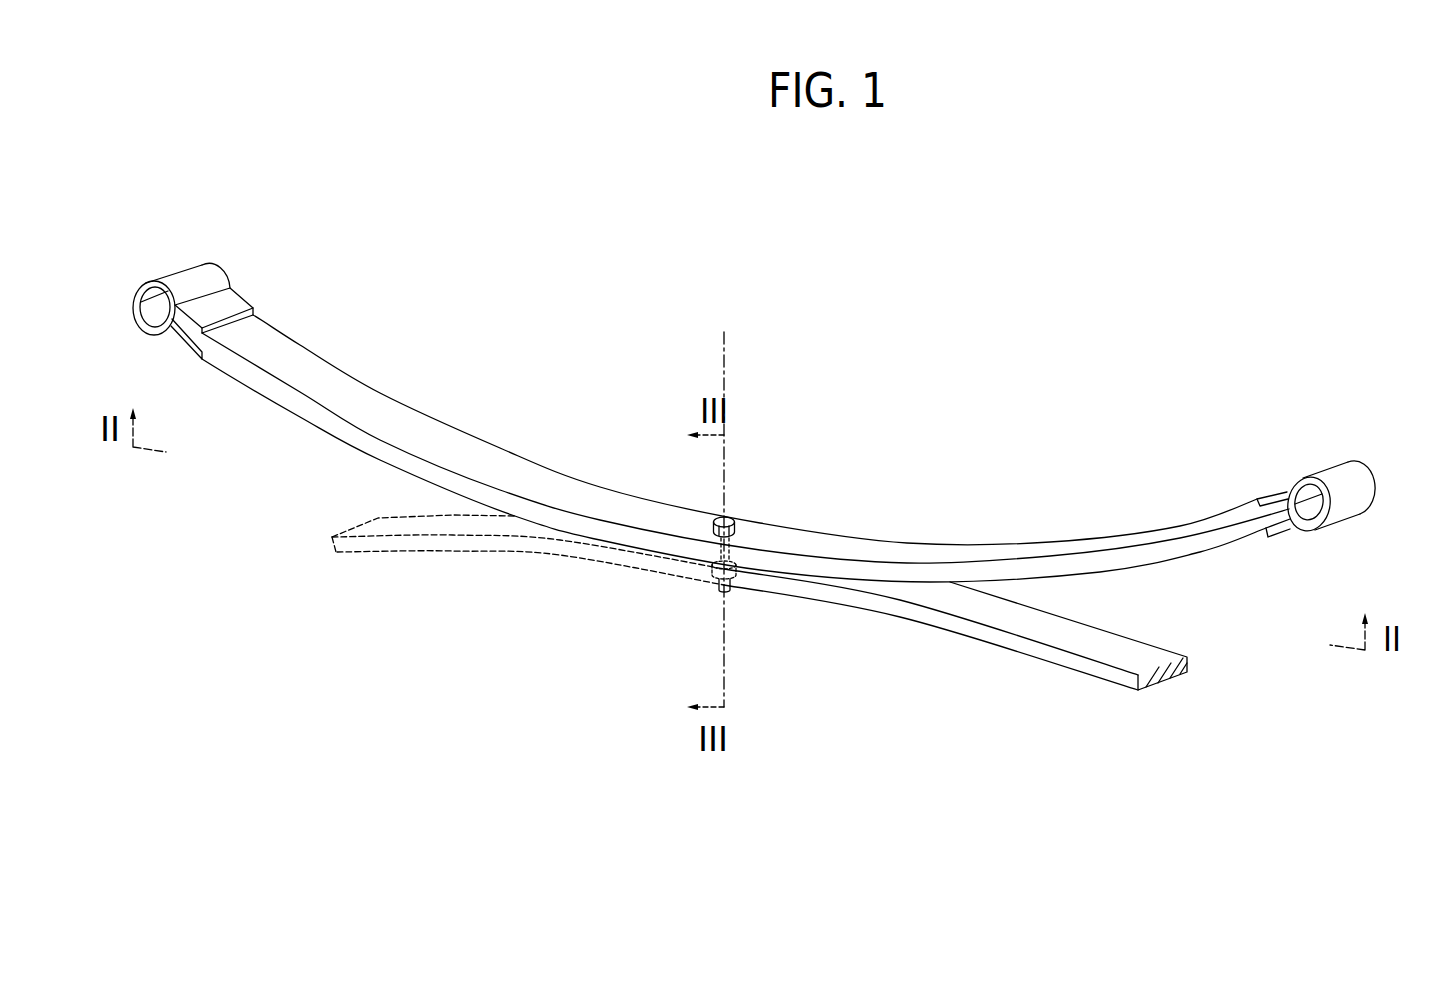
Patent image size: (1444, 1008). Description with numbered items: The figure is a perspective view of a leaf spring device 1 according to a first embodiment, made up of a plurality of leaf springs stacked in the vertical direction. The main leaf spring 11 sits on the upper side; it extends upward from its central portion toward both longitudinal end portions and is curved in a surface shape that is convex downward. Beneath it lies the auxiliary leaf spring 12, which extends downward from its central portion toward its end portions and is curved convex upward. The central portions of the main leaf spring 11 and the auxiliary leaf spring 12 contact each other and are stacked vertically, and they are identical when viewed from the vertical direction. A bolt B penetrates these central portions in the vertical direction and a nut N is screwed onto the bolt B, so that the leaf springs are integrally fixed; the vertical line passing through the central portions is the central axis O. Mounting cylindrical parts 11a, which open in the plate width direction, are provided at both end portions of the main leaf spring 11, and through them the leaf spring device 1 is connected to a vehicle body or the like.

The leaf spring device 1 is at (1264, 410).
The main leaf spring 11 is at (1152, 520).
The mounting cylindrical part 11a is at (186, 280).
The auxiliary leaf spring 12 is at (1200, 648).
The bolt B is at (729, 517).
The nut N is at (721, 578).
The central axis O is at (725, 347).